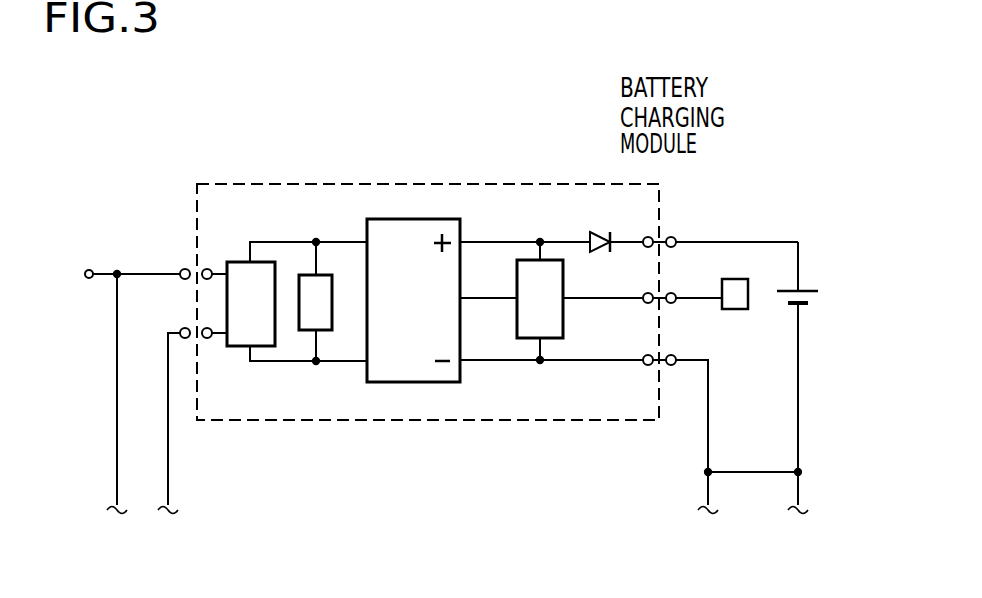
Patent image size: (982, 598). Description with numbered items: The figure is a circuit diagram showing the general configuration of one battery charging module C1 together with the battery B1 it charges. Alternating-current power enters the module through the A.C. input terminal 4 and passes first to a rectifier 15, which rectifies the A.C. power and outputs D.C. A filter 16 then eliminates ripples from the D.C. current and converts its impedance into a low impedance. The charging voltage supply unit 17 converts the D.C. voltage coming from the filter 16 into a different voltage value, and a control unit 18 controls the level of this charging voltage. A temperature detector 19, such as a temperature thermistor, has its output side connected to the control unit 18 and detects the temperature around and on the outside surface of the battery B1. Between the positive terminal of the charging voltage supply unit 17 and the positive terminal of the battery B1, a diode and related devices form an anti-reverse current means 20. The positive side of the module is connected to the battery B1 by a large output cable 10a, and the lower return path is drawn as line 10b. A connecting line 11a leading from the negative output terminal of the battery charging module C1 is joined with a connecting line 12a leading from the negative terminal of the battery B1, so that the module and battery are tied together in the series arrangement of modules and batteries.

The A.C. input terminal 4 is at (90, 269).
The rectifier 15 is at (262, 348).
The filter 16 is at (322, 331).
The charging voltage supply unit 17 is at (424, 383).
The control unit 18 is at (533, 339).
The temperature detector 19 is at (740, 310).
The anti-reverse current means 20 is at (600, 236).
The output cable 10a is at (767, 240).
The battery negative line 10b is at (755, 475).
The connecting line 11a is at (708, 423).
The connecting line 12a is at (800, 451).
The battery B1 is at (810, 357).
The battery charging module C1 is at (528, 183).